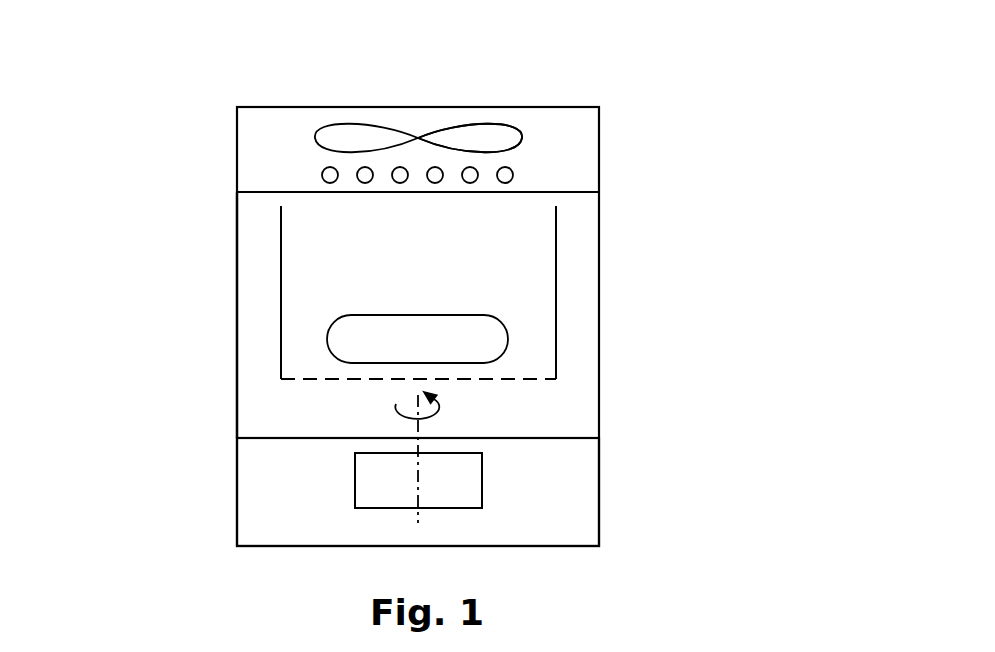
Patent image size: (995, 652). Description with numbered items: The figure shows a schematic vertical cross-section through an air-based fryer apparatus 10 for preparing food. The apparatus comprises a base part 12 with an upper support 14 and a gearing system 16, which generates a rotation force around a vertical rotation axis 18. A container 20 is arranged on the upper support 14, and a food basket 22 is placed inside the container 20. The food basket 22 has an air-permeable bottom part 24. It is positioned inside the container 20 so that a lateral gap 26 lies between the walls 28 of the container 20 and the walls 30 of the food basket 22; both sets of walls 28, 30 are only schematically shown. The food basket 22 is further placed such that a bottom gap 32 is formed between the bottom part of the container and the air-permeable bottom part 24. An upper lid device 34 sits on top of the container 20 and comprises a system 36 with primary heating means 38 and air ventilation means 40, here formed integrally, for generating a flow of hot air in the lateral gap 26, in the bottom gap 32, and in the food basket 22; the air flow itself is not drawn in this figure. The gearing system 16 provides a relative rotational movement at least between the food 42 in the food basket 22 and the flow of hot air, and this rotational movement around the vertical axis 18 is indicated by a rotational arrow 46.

The air-based fryer apparatus 10 is at (700, 80).
The base part 12 is at (615, 488).
The upper support 14 is at (560, 437).
The gearing system 16 is at (355, 485).
The vertical rotation axis 18 is at (423, 517).
The container 20 is at (615, 279).
The food basket 22 is at (575, 215).
The air-permeable bottom part 24 is at (313, 378).
The lateral gap 26 is at (250, 253).
The walls of the container 28 is at (237, 322).
The walls of the food basket 30 is at (282, 240).
The bottom gap 32 is at (528, 399).
The upper lid device 34 is at (205, 130).
The system 36 is at (398, 88).
The primary heating means 38 is at (508, 175).
The air ventilation means 40 is at (482, 132).
The food 42 is at (410, 318).
The rotational arrow 46 is at (397, 402).